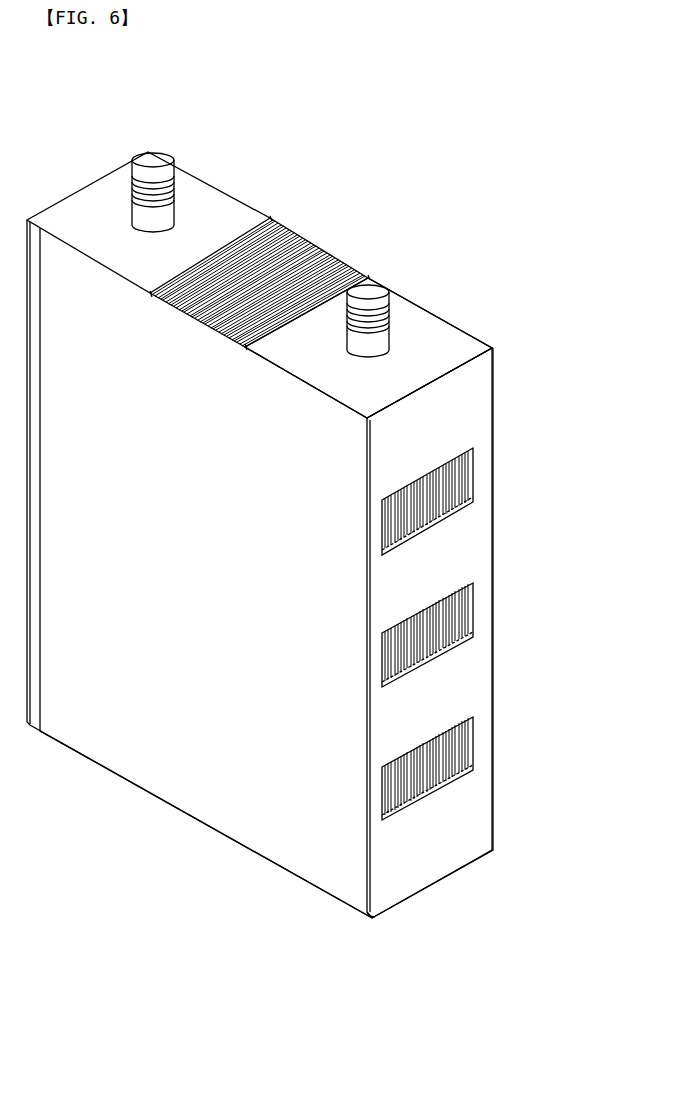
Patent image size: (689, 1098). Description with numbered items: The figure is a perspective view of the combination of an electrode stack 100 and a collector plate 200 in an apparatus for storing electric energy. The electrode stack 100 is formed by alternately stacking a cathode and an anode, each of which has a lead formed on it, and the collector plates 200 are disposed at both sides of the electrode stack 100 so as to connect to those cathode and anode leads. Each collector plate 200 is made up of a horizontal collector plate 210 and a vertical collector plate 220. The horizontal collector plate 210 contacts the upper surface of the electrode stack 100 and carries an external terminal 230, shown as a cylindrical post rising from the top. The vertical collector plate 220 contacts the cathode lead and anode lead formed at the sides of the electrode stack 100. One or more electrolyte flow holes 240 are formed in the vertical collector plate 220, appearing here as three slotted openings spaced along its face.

The electrode stack 100 is at (152, 791).
The collector plate 200 is at (453, 320).
The horizontal collector plate 210 is at (405, 308).
The vertical collector plate 220 is at (482, 415).
The external terminal 230 is at (153, 165).
The electrolyte flow hole 240 is at (463, 473).